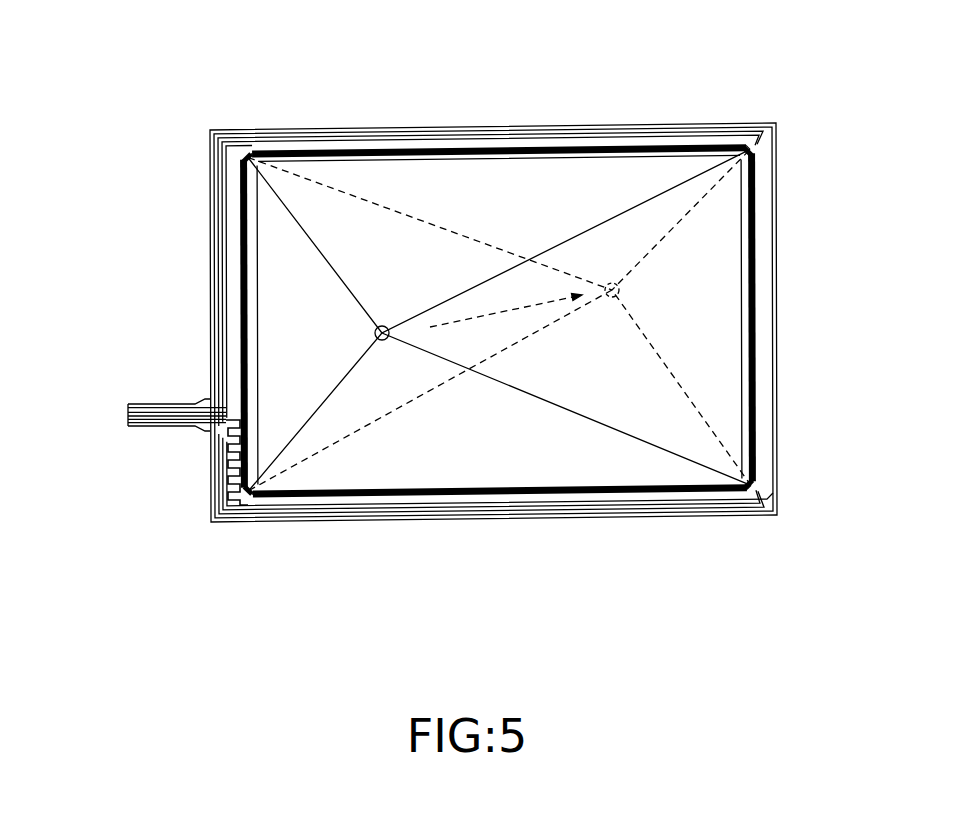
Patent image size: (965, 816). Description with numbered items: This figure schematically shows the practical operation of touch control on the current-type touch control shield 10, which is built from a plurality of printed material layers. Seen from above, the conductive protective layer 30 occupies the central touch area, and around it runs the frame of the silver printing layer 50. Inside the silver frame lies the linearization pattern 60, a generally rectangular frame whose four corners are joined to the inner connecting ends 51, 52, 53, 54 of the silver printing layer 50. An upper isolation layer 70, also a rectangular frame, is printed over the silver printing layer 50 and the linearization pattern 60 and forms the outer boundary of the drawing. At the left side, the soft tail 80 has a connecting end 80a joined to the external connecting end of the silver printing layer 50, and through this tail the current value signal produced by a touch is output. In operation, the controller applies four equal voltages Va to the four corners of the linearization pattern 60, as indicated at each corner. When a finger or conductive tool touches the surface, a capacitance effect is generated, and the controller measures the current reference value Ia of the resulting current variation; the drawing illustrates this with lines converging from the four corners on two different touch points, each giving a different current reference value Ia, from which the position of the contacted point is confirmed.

The current-type touch control shield 10 is at (420, 190).
The protective layer 30 is at (705, 347).
The silver printing layer 50 is at (595, 137).
The inner connecting end 51 is at (750, 150).
The inner connecting end 52 is at (246, 155).
The inner connecting end 53 is at (248, 492).
The inner connecting end 54 is at (751, 488).
The linearization pattern 60 is at (755, 273).
The upper isolation layer 70 is at (775, 188).
The soft tail 80 is at (158, 410).
The connecting end 80a is at (207, 410).
The equal voltages Va is at (248, 158).
The current reference value Ia is at (382, 340).